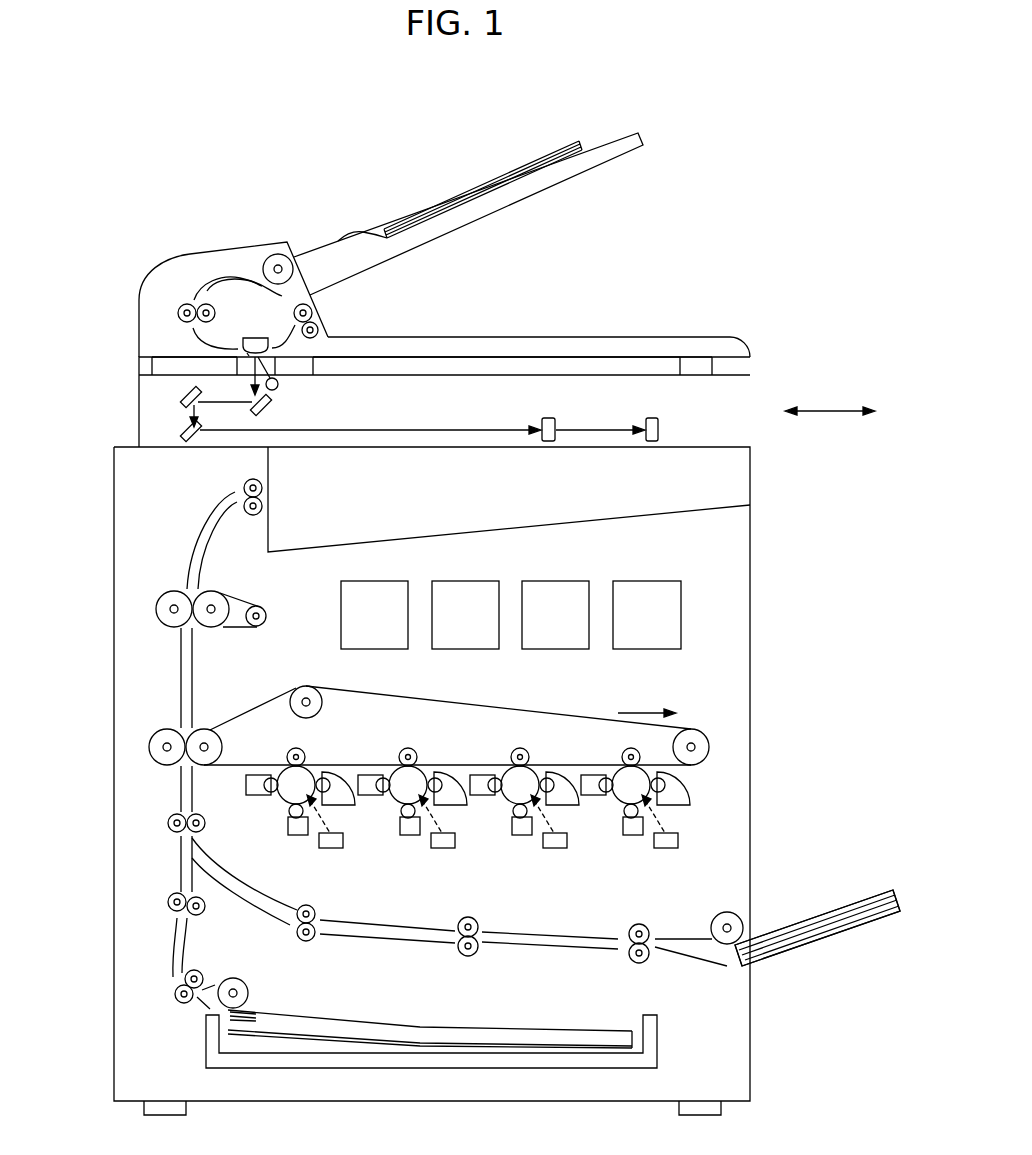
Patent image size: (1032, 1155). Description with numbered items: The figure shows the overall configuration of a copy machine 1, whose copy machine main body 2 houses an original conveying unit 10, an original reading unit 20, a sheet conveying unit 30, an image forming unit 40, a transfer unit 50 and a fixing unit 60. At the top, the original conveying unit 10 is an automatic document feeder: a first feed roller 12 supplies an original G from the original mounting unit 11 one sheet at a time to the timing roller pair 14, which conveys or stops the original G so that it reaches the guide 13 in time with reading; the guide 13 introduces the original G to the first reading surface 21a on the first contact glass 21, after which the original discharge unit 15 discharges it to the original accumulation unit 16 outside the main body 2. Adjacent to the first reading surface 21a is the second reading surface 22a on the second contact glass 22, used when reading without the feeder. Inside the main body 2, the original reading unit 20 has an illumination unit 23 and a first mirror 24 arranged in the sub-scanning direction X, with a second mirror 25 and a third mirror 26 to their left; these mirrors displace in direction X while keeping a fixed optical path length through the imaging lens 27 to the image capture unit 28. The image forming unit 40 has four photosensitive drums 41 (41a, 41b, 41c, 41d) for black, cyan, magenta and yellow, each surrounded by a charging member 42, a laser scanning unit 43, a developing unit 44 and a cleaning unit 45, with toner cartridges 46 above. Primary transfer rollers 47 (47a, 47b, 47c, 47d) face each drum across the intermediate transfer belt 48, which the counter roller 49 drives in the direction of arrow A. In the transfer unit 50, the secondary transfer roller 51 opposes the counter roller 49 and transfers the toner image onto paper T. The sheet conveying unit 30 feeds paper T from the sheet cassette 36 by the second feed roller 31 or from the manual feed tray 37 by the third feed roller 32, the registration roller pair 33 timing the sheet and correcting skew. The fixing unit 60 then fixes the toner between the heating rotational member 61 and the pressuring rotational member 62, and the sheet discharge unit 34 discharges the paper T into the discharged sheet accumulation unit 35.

The copy machine 1 is at (727, 131).
The copy machine main body 2 is at (762, 538).
The original conveying unit 10 is at (390, 221).
The original mounting unit 11 is at (612, 136).
The first feed roller 12 is at (277, 253).
The guide 13 is at (257, 345).
The timing roller pair 14 is at (183, 305).
The original discharge unit 15 is at (327, 313).
The original accumulation unit 16 is at (395, 336).
The original reading unit 20 is at (443, 363).
The first contact glass 21 is at (247, 364).
The first reading surface 21a is at (245, 352).
The second contact glass 22 is at (523, 367).
The second reading surface 22a is at (612, 360).
The illumination unit 23 is at (280, 385).
The first mirror 24 is at (268, 410).
The second mirror 25 is at (182, 394).
The third mirror 26 is at (182, 430).
The imaging lens 27 is at (551, 418).
The image capture unit 28 is at (654, 418).
The sheet conveying unit 30 is at (487, 781).
The second feed roller 31 is at (248, 986).
The third feed roller 32 is at (740, 916).
The registration roller pair 33 is at (168, 824).
The sheet discharge unit 34 is at (265, 494).
The discharged sheet accumulation unit 35 is at (333, 546).
The sheet cassette 36 is at (659, 1052).
The manual feed tray 37 is at (866, 925).
The image forming unit 40 is at (504, 735).
The photosensitive drum 41 is at (473, 847).
The photosensitive drum 41a is at (293, 830).
The photosensitive drum 41b is at (398, 803).
The photosensitive drum 41c is at (507, 800).
The photosensitive drum 41d is at (597, 832).
The charging member 42 is at (633, 838).
The laser scanning unit 43 is at (668, 850).
The developing unit 44 is at (678, 807).
The cleaning unit 45 is at (252, 798).
The toner cartridge 46 is at (396, 581).
The primary transfer roller 47 is at (463, 707).
The primary transfer roller 47a is at (300, 748).
The primary transfer roller 47b is at (410, 748).
The primary transfer roller 47c is at (520, 748).
The primary transfer roller 47d is at (613, 723).
The intermediate transfer belt 48 is at (299, 687).
The counter roller 49 is at (208, 731).
The transfer unit 50 is at (156, 726).
The secondary transfer roller 51 is at (152, 758).
The fixing unit 60 is at (170, 587).
The heating rotational member 61 is at (215, 600).
The pressuring rotational member 62 is at (156, 610).
The arrow A is at (647, 702).
The original G is at (508, 178).
The paper T is at (566, 1030).
The sub-scanning direction X is at (830, 424).